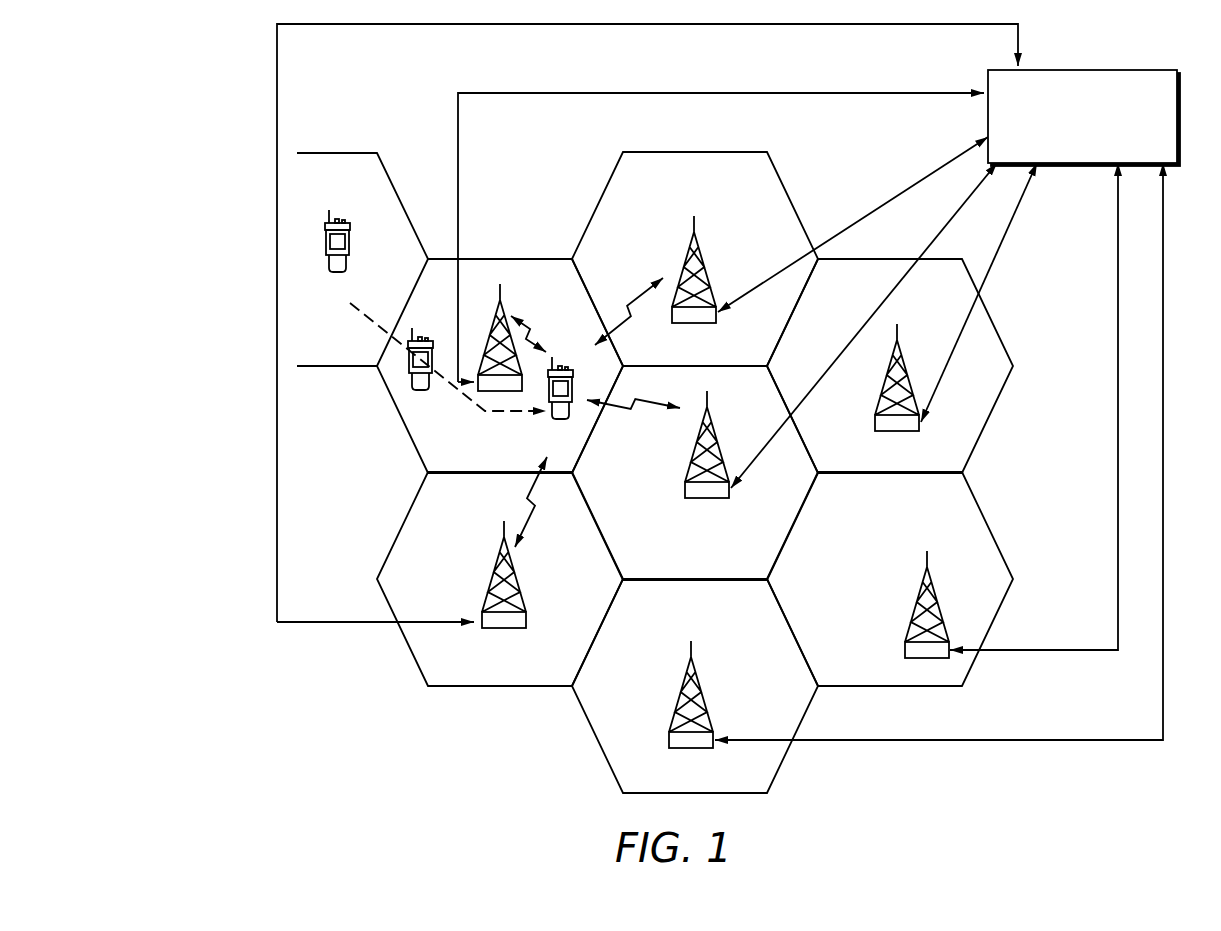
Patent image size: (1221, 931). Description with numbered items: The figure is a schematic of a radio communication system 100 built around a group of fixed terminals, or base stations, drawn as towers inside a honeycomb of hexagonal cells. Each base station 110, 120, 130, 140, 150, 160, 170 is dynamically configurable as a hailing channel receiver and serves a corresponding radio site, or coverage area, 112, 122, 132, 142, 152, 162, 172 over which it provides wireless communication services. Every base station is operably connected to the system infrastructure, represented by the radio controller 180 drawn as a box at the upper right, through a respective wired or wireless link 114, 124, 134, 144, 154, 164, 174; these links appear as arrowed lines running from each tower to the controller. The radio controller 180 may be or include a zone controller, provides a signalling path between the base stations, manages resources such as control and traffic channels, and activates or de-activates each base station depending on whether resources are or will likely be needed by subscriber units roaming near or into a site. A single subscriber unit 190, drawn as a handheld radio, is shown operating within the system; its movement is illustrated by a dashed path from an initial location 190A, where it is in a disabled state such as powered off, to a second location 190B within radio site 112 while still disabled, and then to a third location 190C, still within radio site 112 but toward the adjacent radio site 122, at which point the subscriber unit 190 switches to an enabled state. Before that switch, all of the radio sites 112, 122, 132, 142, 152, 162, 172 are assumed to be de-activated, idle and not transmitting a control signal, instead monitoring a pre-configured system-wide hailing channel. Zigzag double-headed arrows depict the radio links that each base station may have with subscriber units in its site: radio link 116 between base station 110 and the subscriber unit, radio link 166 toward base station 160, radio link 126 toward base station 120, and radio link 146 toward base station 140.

The system 100 is at (190, 93).
The fixed terminal 110 is at (498, 308).
The radio site 112 is at (497, 259).
The link 114 is at (458, 160).
The radio link 116 is at (532, 332).
The fixed terminal 120 is at (717, 425).
The radio site 122 is at (790, 527).
The link 124 is at (945, 228).
The radio link 126 is at (640, 398).
The fixed terminal 130 is at (933, 593).
The radio site 132 is at (971, 668).
The link 134 is at (1118, 481).
The fixed terminal 140 is at (510, 565).
The radio site 142 is at (442, 687).
The link 144 is at (277, 497).
The radio link 146 is at (527, 503).
The fixed terminal 150 is at (700, 682).
The radio site 152 is at (598, 740).
The link 154 is at (1163, 695).
The fixed terminal 160 is at (698, 242).
The radio site 162 is at (693, 152).
The link 164 is at (913, 182).
The radio link 166 is at (645, 292).
The fixed terminal 170 is at (880, 392).
The radio site 172 is at (993, 412).
The link 174 is at (1008, 230).
The radio controller 180 is at (1138, 68).
The subscriber unit 190 is at (465, 331).
The initial location 190A is at (338, 256).
The second location 190B is at (431, 376).
The third location 190C is at (556, 405).